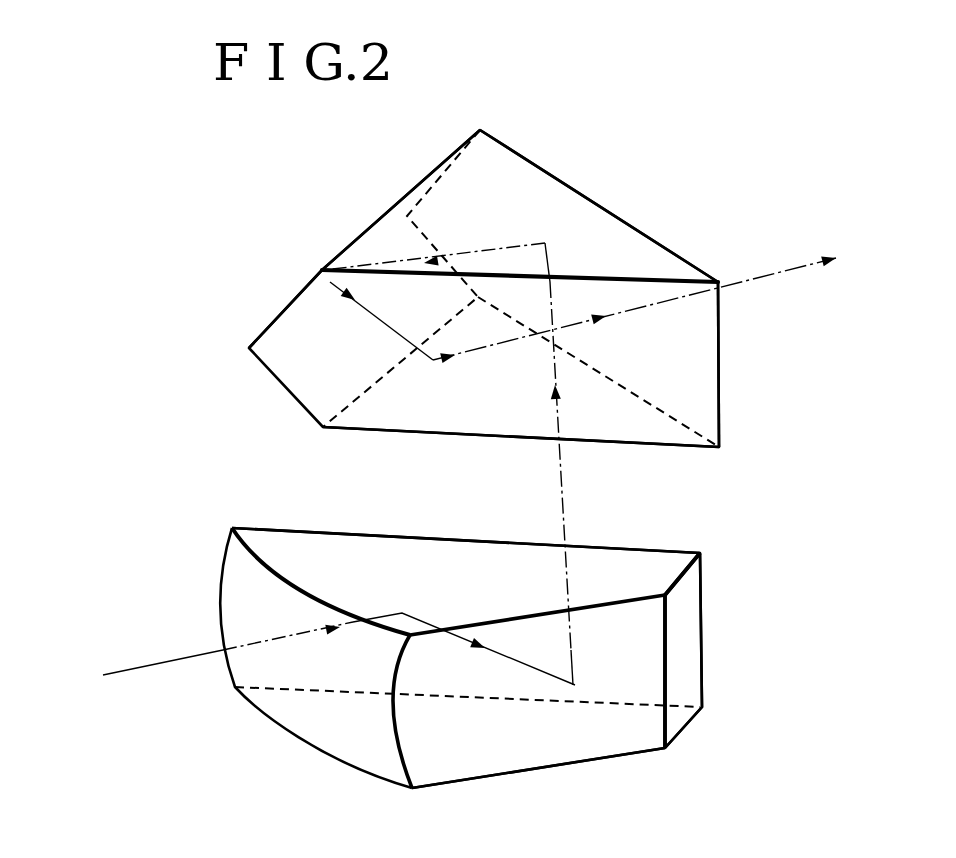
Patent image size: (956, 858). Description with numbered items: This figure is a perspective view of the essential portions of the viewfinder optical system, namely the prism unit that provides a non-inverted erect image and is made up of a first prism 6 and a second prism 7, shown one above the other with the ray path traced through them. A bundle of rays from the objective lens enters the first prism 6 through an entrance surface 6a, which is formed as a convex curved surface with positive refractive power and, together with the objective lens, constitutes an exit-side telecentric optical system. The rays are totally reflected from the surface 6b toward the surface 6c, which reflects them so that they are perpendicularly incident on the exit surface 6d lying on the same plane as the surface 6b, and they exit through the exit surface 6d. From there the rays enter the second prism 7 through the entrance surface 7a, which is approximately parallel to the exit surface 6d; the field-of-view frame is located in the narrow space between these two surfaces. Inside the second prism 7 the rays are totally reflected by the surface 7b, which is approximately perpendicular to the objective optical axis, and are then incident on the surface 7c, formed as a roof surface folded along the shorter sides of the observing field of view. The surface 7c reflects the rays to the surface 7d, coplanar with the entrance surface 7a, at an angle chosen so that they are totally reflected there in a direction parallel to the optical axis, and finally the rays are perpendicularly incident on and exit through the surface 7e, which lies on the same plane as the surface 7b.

The first prism 6 is at (205, 558).
The entrance surface 6a is at (292, 725).
The surface 1-2 6b is at (383, 565).
The surface 1-3 6c is at (572, 740).
The exit surface 6d is at (625, 570).
The second prism 7 is at (335, 213).
The entrance surface 7a is at (662, 437).
The surface 2-2 7b is at (590, 223).
The roof surface 7c is at (297, 297).
The surface 2-4 7d is at (743, 465).
The exit surface 7e is at (695, 363).